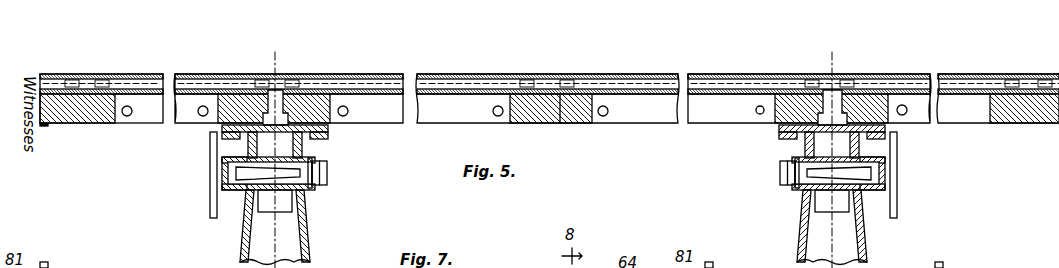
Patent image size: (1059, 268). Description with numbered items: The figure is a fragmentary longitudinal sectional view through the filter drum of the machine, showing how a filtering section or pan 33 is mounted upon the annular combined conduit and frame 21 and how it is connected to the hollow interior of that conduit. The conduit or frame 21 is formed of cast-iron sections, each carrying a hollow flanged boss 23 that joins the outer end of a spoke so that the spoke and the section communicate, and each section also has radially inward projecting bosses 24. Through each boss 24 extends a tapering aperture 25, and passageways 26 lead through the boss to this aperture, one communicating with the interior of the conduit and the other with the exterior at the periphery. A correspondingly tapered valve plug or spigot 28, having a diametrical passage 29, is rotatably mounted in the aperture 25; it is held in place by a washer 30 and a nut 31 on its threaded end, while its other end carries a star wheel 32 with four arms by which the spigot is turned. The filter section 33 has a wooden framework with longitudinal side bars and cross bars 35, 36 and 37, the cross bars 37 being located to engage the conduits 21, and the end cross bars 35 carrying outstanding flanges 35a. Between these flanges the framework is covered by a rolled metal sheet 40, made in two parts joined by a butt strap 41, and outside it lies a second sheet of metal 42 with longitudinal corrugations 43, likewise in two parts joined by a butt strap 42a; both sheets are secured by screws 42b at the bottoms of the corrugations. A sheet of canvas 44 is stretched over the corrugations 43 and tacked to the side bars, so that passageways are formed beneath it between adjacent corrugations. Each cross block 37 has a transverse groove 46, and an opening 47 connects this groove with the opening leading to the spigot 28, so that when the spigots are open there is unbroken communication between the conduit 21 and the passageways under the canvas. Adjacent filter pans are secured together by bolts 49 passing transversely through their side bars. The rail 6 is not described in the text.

The rail 6 is at (552, 89).
The combined conduit and frame 21 is at (307, 203).
The hollow flanged boss 23 is at (290, 246).
The radially inward projecting boss 24 is at (237, 193).
The tapering aperture 25 is at (317, 187).
The passageway 26 is at (312, 215).
The valve plug or spigot 28 is at (225, 179).
The diametrical passage 29 is at (275, 186).
The washer 30 is at (305, 160).
The nut 31 is at (327, 174).
The star wheel 32 is at (211, 136).
The filtering section or pan 33 is at (502, 85).
The end cross bar 35 is at (98, 118).
The outstanding flange 35a is at (63, 96).
The cross bar 36 is at (570, 118).
The cross bar 37 is at (343, 125).
The rolled metal sheet 40 is at (475, 93).
The butt strap 41 is at (526, 118).
The second sheet of metal 42 is at (657, 71).
The butt strap 42a is at (593, 84).
The screw 42b is at (88, 93).
The longitudinal corrugation 43 is at (432, 76).
The sheet of canvas 44 is at (383, 92).
The groove 46 is at (327, 90).
The opening 47 is at (266, 92).
The bolt 49 is at (127, 117).